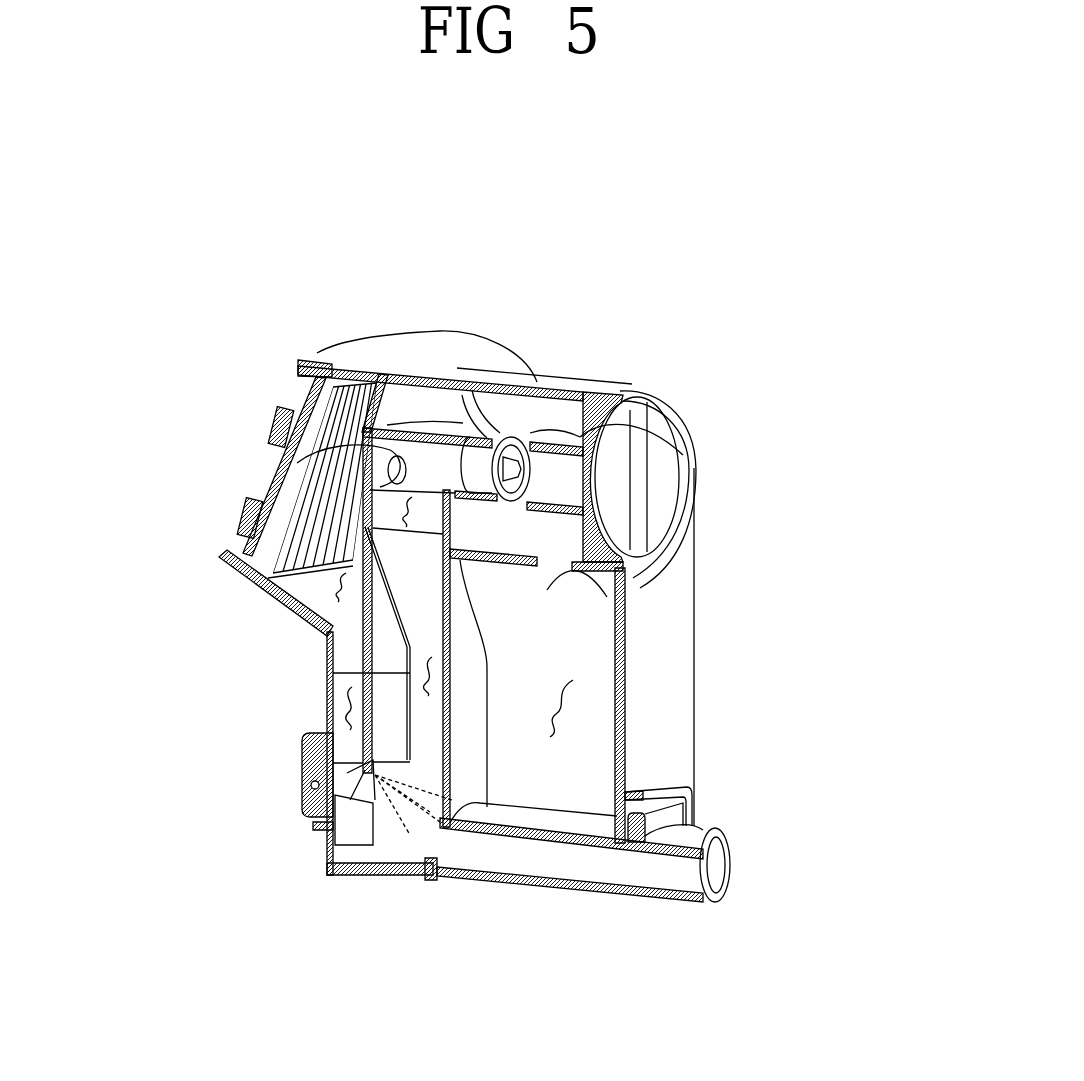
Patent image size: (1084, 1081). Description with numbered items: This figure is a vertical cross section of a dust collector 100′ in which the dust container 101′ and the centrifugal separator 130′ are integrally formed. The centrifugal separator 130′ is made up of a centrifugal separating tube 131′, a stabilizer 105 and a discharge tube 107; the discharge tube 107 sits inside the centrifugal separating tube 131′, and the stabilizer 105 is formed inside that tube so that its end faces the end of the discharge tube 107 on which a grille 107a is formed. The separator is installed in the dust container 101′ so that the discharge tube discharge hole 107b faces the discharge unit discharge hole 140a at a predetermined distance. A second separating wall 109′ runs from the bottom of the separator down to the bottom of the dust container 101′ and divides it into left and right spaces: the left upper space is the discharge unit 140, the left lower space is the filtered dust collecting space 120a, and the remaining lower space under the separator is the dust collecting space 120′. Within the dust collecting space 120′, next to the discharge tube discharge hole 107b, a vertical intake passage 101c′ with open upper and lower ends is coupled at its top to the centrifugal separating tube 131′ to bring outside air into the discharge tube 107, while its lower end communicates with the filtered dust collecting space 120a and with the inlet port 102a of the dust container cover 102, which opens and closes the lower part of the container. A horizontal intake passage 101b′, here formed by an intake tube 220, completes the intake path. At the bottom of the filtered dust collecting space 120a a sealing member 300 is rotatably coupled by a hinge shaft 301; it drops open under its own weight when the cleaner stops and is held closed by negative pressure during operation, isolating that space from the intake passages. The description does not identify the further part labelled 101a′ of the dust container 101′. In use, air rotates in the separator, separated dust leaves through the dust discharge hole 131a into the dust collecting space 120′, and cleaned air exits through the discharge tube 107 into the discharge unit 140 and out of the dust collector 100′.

The dust collector 100′ is at (840, 183).
The dust container 101′ is at (695, 630).
The coupling protrusion 101a′ is at (240, 525).
The horizontal intake passage 101b′ is at (453, 878).
The vertical intake passage 101c′ is at (365, 707).
The dust container cover 102 is at (540, 880).
The inlet port 102a is at (385, 870).
The stabilizer 105 is at (683, 455).
The discharge tube 107 is at (434, 430).
The grille 107a is at (463, 395).
The discharge tube discharge hole 107b is at (390, 462).
The second separating wall 109′ is at (365, 628).
The dust collecting space 120′ is at (623, 718).
The filtered dust collecting space 120a is at (318, 737).
The centrifugal separator 130′ is at (634, 378).
The centrifugal separating tube 131′ is at (565, 392).
The dust discharge hole 131a is at (565, 593).
The discharge unit 140 is at (363, 579).
The discharge unit discharge hole 140a is at (320, 488).
The intake tube 220 is at (700, 822).
The sealing member 300 is at (328, 836).
The hinge shaft 301 is at (305, 798).